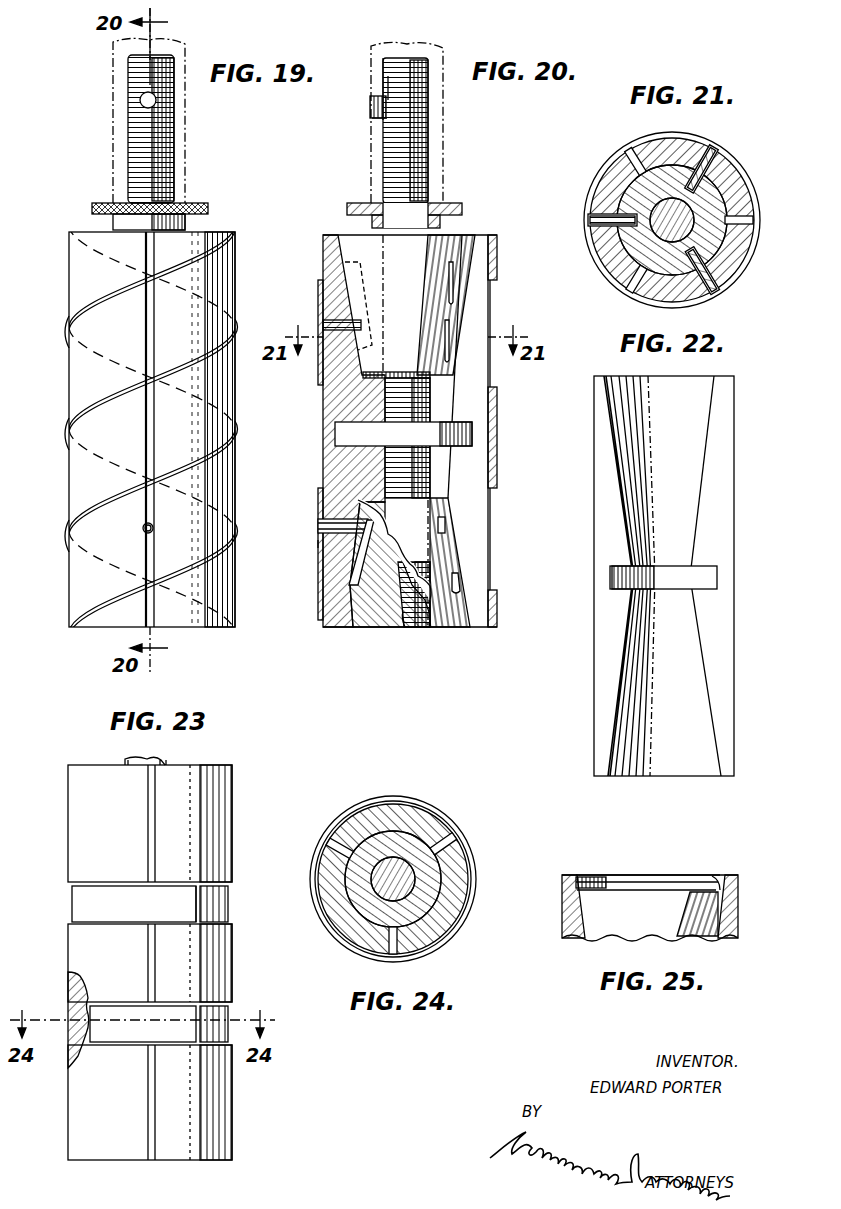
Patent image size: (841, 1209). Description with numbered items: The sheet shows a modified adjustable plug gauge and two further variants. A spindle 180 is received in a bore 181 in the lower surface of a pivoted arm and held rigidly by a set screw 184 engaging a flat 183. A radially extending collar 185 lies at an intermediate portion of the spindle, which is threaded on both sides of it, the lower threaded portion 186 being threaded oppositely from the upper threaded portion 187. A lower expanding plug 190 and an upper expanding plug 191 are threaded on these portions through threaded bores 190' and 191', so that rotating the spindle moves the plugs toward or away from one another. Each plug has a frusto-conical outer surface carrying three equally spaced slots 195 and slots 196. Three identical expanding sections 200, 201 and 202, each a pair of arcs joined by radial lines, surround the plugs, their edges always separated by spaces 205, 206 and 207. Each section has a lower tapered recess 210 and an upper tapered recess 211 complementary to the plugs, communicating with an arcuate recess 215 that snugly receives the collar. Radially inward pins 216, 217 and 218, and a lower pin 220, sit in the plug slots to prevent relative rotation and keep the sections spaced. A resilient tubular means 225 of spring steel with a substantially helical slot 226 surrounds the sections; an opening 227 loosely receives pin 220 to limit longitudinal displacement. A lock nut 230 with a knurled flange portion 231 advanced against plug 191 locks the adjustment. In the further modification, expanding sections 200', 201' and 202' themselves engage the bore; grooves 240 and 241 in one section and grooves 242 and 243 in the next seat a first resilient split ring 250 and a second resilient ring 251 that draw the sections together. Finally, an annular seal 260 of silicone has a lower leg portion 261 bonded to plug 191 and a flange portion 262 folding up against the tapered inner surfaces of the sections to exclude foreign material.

In FIG. 19, the spindle 180 is at (128, 134).
In FIG. 20, the spindle 180 is at (434, 149).
In FIG. 20, the bore 181 is at (353, 89).
In FIG. 20, the flat 183 is at (378, 123).
In FIG. 19, the set screw 184 is at (141, 102).
In FIG. 20, the set screw 184 is at (372, 107).
In FIG. 20, the radially extending collar 185 is at (472, 446).
In FIG. 20, the lower threaded portion 186 is at (436, 481).
In FIG. 20, the upper threaded portion 187 is at (436, 375).
In FIG. 20, the lower expanding plug 190 is at (459, 582).
In FIG. 20, the threaded bore 190' is at (388, 638).
In FIG. 20, the upper expanding plug 191 is at (487, 221).
In FIG. 25, the upper expanding plug 191 is at (697, 925).
In FIG. 20, the threaded bore 191' is at (362, 298).
In FIG. 20, the grooves or slots 195 is at (450, 580).
In FIG. 20, the grooves or slots 196 is at (352, 268).
In FIG. 20, the expanding section 200 is at (387, 431).
In FIG. 21, the expanding section 200 is at (655, 220).
In FIG. 22, the expanding section 200 is at (641, 576).
In FIG. 25, the expanding section 200 is at (642, 893).
In FIG. 23, the expanding section 200' is at (124, 962).
In FIG. 24, the expanding section 200' is at (381, 884).
In FIG. 21, the expanding section 201 is at (682, 220).
In FIG. 25, the expanding section 201 is at (751, 906).
In FIG. 23, the expanding section 201' is at (244, 962).
In FIG. 24, the expanding section 201' is at (405, 883).
In FIG. 21, the expanding section 202 is at (700, 209).
In FIG. 24, the expanding section 202' is at (407, 853).
In FIG. 21, the space 205 is at (630, 286).
In FIG. 21, the space 206 is at (750, 220).
In FIG. 21, the space 207 is at (638, 154).
In FIG. 22, the tapered frusto-conical recess 210 is at (704, 728).
In FIG. 22, the tapered frusto-conical recess 211 is at (704, 428).
In FIG. 22, the arcuate recess 215 is at (718, 572).
In FIG. 20, the pin 216 is at (330, 322).
In FIG. 21, the pin 216 is at (600, 214).
In FIG. 21, the pin 217 is at (708, 278).
In FIG. 21, the pin 218 is at (688, 148).
In FIG. 19, the pin 220 is at (153, 530).
In FIG. 20, the pin 220 is at (334, 520).
In FIG. 19, the resilient tubular means 225 is at (69, 392).
In FIG. 19, the slot 226 is at (90, 508).
In FIG. 19, the opening 227 is at (152, 522).
In FIG. 20, the opening 227 is at (322, 546).
In FIG. 19, the lock nut 230 is at (185, 220).
In FIG. 20, the lock nut 230 is at (372, 219).
In FIG. 19, the flange portion 231 is at (92, 209).
In FIG. 20, the flange portion 231 is at (454, 204).
In FIG. 23, the groove 240 is at (72, 890).
In FIG. 23, the groove 241 is at (68, 1008).
In FIG. 23, the groove 242 is at (228, 894).
In FIG. 23, the groove 243 is at (232, 1006).
In FIG. 23, the first resilient split ring 250 is at (230, 918).
In FIG. 23, the second resilient ring 251 is at (68, 1060).
In FIG. 24, the second resilient ring 251 is at (474, 876).
In FIG. 25, the annular seal 260 is at (588, 878).
In FIG. 25, the lower leg portion 261 is at (584, 895).
In FIG. 25, the flange portion 262 is at (720, 862).